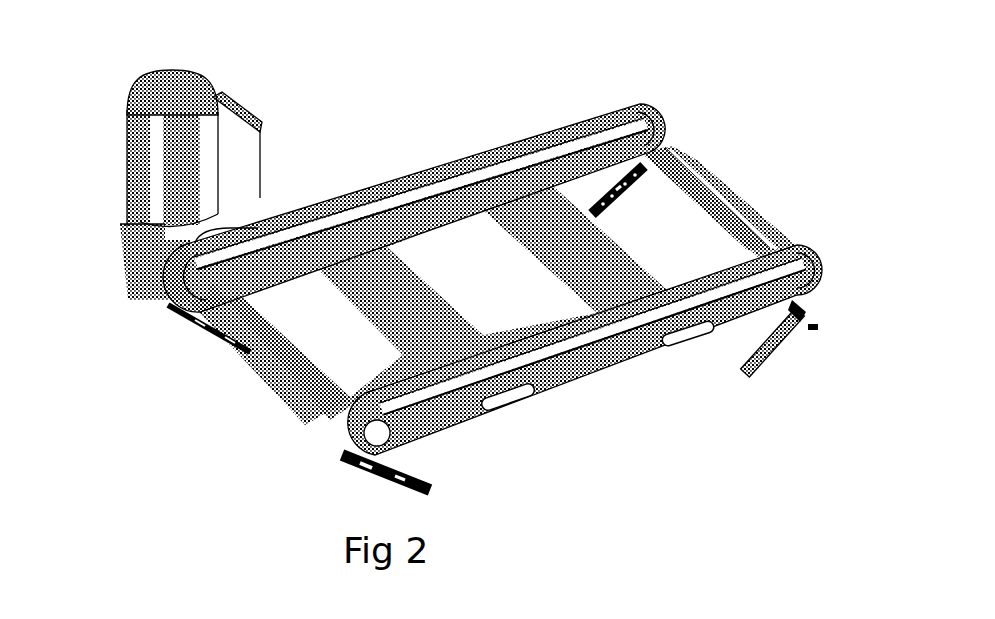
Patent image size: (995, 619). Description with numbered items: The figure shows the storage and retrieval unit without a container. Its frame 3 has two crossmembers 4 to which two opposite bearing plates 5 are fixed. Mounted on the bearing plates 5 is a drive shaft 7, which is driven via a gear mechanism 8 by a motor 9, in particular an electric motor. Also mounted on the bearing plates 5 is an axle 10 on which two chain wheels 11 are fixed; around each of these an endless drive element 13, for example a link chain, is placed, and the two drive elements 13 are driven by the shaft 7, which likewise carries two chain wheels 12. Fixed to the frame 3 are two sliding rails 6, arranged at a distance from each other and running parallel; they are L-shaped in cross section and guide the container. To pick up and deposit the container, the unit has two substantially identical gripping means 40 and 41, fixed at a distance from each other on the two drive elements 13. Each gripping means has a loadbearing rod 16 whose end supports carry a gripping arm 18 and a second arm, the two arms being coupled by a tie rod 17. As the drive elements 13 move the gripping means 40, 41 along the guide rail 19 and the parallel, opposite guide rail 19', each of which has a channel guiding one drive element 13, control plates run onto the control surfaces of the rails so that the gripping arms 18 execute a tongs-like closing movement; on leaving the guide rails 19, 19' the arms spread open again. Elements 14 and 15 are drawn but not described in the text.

The frame 3 is at (693, 230).
The crossmembers 4 is at (533, 237).
The bearing plates 5 is at (607, 353).
The sliding rails 6 is at (463, 197).
The drive shaft 7 is at (273, 350).
The gear mechanism 8 is at (157, 273).
The motor 9 is at (153, 177).
The axle 10 is at (647, 153).
The chain wheels 11 is at (643, 113).
The chain wheels 12 is at (227, 240).
The endless drive element 13 is at (540, 127).
The rail end cap 14 is at (823, 288).
The mounting bracket 15 is at (347, 460).
The loadbearing rod 16 is at (240, 357).
The tie rod 17 is at (700, 227).
The gripping arm 18 is at (777, 357).
The guide rail 19 is at (594, 359).
The guide rail 19' is at (422, 189).
The gripping means 40 is at (820, 328).
The gripping means 41 is at (300, 423).